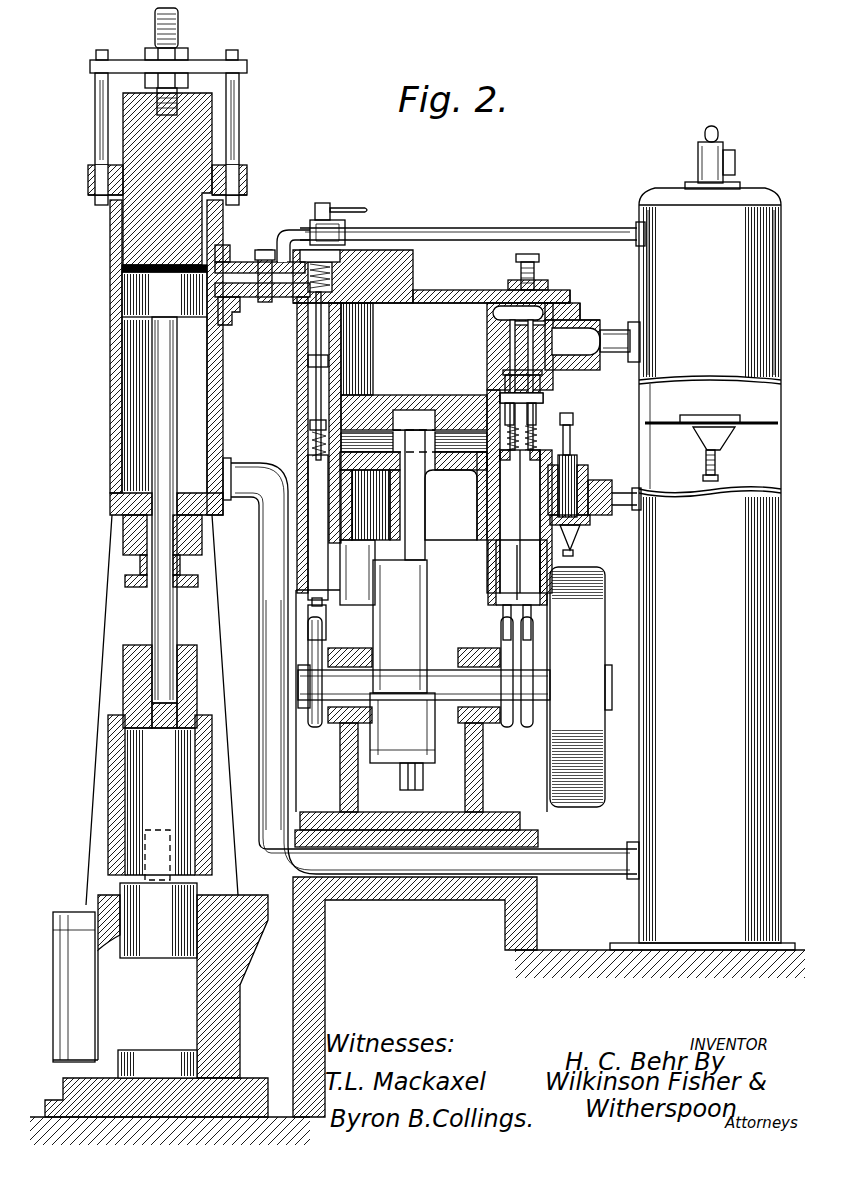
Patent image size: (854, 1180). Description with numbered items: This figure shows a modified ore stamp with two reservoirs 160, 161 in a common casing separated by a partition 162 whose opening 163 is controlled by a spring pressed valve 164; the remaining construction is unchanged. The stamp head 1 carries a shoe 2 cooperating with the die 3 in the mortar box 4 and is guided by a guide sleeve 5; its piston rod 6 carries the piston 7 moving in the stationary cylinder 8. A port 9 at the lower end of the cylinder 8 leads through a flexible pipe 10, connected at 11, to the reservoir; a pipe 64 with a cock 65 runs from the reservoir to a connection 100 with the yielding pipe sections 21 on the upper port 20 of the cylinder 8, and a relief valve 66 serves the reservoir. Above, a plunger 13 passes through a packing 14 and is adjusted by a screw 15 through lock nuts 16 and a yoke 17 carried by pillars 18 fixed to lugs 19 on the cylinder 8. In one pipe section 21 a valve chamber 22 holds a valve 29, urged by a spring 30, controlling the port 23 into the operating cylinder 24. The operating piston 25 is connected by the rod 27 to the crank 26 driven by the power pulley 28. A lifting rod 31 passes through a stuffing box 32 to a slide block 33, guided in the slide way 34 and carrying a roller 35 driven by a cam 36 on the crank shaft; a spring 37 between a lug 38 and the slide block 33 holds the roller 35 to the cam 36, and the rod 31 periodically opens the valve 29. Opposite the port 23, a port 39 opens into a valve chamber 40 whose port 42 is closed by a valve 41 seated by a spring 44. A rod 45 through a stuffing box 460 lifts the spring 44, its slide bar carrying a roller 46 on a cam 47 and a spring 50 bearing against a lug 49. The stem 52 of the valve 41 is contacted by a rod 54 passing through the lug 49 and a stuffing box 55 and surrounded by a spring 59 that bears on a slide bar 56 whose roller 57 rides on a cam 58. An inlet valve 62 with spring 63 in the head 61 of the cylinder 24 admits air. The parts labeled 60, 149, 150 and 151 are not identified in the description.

The stamp head 1 is at (160, 762).
The shoe 2 is at (158, 920).
The die 3 is at (160, 1060).
The mortar box 4 is at (230, 1035).
The guide sleeve 5 is at (108, 800).
The piston rod 6 is at (152, 618).
The piston 7 is at (164, 294).
The cylinder 8 is at (112, 398).
The port 9 is at (228, 478).
The pipe 10 is at (259, 583).
The connection 11 is at (628, 875).
The plunger 13 is at (135, 242).
The packing 14 is at (88, 190).
The screw 15 is at (155, 22).
The lock nuts 16 is at (185, 75).
The yoke 17 is at (90, 70).
The pillars 18 is at (95, 126).
The lugs 19 is at (92, 172).
The port 20 is at (224, 305).
The pipe sections 21 is at (268, 300).
The valve chamber 22 is at (355, 262).
The port 23 is at (371, 349).
The operating cylinder 24 is at (316, 381).
The operating piston 25 is at (413, 456).
The crank 26 is at (424, 780).
The rod 27 is at (410, 607).
The power pulley 28 is at (581, 687).
The valve 29 is at (348, 272).
The spring 30 is at (346, 228).
The lifting rod 31 is at (305, 405).
The stuffing box 32 is at (308, 360).
The slide block 33 is at (308, 462).
The slide way 34 is at (356, 572).
The roller 35 is at (326, 632).
The cam 36 is at (318, 728).
The spring 37 is at (312, 443).
The lug 38 is at (310, 424).
The port 39 is at (495, 318).
The valve chamber 40 is at (555, 295).
The valve 41 is at (590, 300).
The port 42 is at (588, 325).
The spring 44 is at (518, 300).
The rod 45 is at (508, 340).
The roller 46 is at (503, 628).
The cam 47 is at (495, 735).
The lug 49 is at (560, 412).
The spring 50 is at (456, 496).
The stem 52 is at (593, 342).
The rod 54 is at (543, 388).
The stuffing box 55 is at (555, 375).
The slide bar 56 is at (547, 605).
The roller 57 is at (535, 635).
The cam 58 is at (527, 727).
The spring 59 is at (585, 440).
The valve chamber 60 is at (545, 540).
The head 61 is at (498, 292).
The inlet valve 62 is at (430, 303).
The spring 63 is at (520, 270).
The pipe 64 is at (525, 228).
The cock 65 is at (330, 207).
The relief valve 66 is at (698, 165).
The connection 100 is at (283, 258).
The packing ring 149 is at (122, 272).
The rod 150 is at (505, 580).
The crank shaft 151 is at (424, 685).
The reservoir 160 is at (702, 569).
The reservoir 161 is at (711, 292).
The partition 162 is at (756, 422).
The opening 163 is at (728, 432).
The spring pressed valve 164 is at (700, 425).
The stuffing box 460 is at (500, 383).